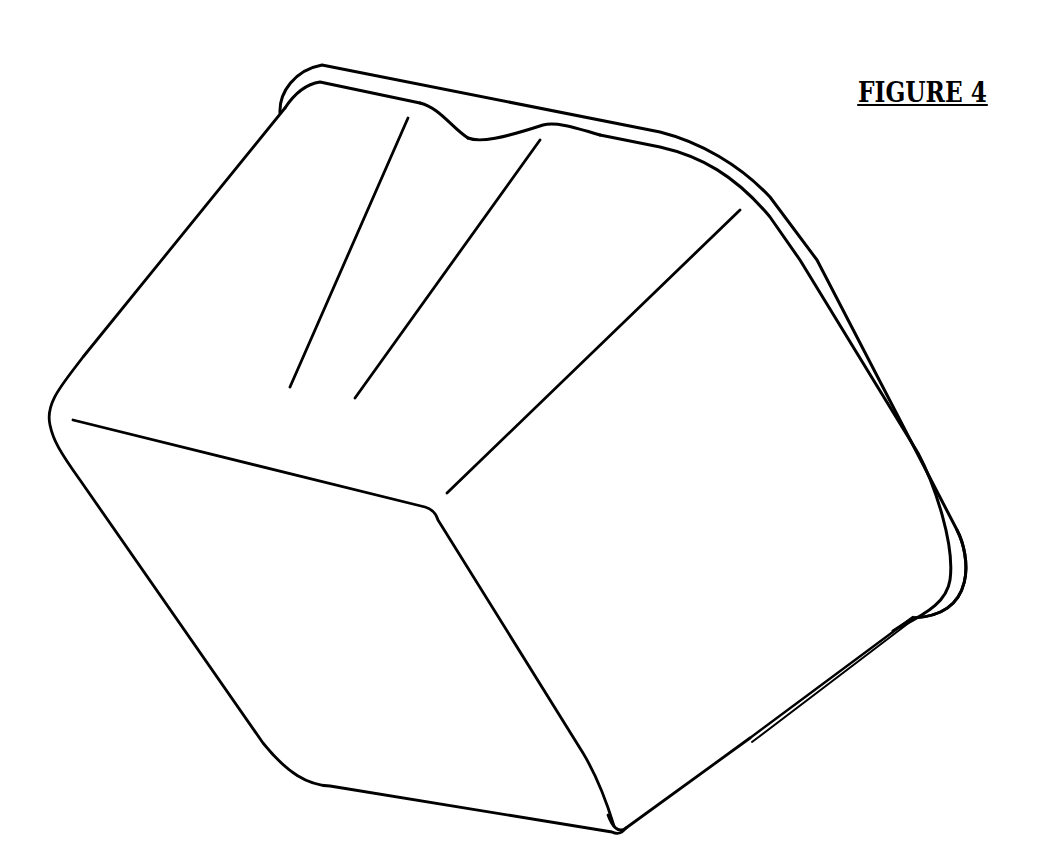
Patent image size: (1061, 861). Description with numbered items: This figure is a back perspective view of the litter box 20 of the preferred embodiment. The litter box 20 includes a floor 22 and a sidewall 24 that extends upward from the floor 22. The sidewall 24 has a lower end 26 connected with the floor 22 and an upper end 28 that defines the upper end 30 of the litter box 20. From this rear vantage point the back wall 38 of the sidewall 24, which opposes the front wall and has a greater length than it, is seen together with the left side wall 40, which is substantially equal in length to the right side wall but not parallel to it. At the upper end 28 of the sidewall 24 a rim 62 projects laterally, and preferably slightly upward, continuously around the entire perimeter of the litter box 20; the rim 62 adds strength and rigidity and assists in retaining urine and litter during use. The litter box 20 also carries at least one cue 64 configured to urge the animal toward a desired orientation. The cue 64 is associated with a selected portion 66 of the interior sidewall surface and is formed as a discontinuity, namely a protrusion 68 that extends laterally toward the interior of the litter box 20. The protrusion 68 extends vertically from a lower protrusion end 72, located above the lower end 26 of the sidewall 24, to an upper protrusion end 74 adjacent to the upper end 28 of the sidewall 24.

The litter box 20 is at (542, 426).
The floor 22 is at (250, 663).
The sidewall 24 is at (755, 712).
The lower end 26 is at (627, 800).
The upper end 28 is at (943, 560).
The upper end 30 is at (923, 442).
The back wall 38 is at (657, 197).
The left side wall 40 is at (848, 628).
The rim 62 is at (620, 354).
The cue 64 is at (657, 322).
The selected portion 66 is at (408, 263).
The protrusion 68 is at (467, 150).
The lower protrusion end 72 is at (320, 402).
The upper protrusion end 74 is at (460, 147).